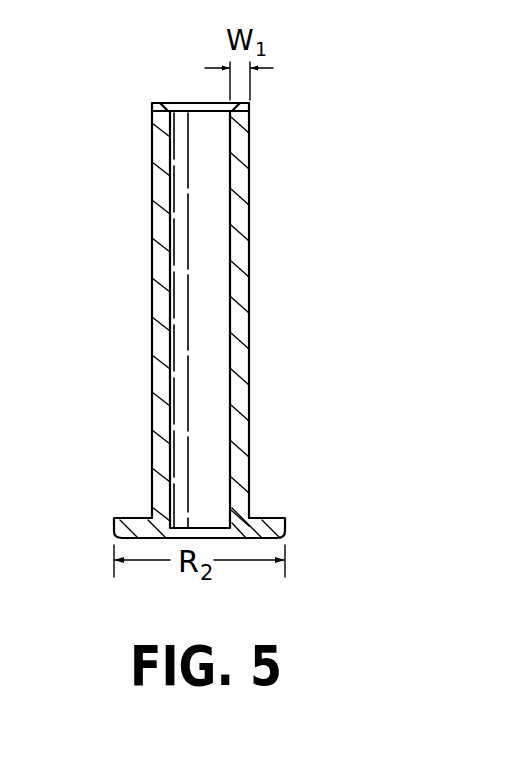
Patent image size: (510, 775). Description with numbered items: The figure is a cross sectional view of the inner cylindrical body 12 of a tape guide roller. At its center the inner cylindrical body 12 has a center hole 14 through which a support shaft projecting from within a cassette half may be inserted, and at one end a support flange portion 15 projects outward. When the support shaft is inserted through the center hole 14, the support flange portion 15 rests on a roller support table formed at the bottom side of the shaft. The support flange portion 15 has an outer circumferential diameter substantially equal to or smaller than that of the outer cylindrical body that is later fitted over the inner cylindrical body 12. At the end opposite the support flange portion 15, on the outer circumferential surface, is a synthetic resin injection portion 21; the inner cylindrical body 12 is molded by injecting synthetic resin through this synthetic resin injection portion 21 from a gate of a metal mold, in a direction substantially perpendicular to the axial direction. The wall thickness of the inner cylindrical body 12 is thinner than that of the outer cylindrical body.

The inner cylindrical body 12 is at (246, 173).
The center hole 14 is at (240, 267).
The support flange portion 15 is at (287, 525).
The synthetic resin injection portion 21 is at (160, 103).